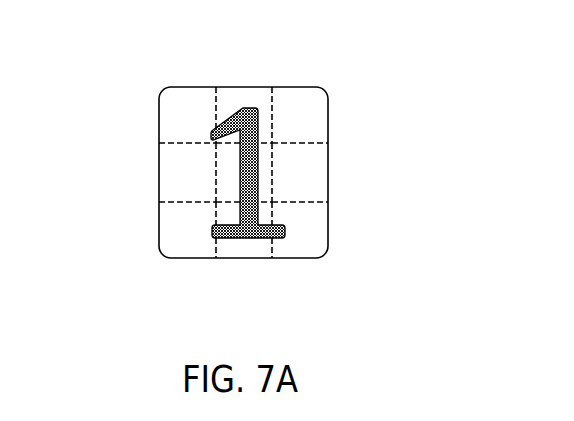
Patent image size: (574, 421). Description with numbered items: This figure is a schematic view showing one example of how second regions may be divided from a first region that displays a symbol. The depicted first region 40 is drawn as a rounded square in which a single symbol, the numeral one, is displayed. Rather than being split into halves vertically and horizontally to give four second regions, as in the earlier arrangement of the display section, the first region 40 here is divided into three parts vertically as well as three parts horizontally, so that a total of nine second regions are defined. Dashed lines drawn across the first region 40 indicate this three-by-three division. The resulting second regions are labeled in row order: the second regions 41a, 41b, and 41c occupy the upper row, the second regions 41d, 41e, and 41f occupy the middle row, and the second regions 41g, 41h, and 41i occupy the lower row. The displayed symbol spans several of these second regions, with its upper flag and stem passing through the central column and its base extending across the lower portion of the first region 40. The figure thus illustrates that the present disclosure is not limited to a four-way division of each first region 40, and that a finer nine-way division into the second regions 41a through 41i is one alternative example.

The first region 40 is at (290, 258).
The second region 41a is at (193, 98).
The second region 41b is at (247, 98).
The second region 41c is at (303, 98).
The second region 41d is at (165, 159).
The second region 41e is at (260, 155).
The second region 41f is at (325, 183).
The second region 41g is at (165, 229).
The second region 41h is at (230, 250).
The second region 41i is at (325, 230).